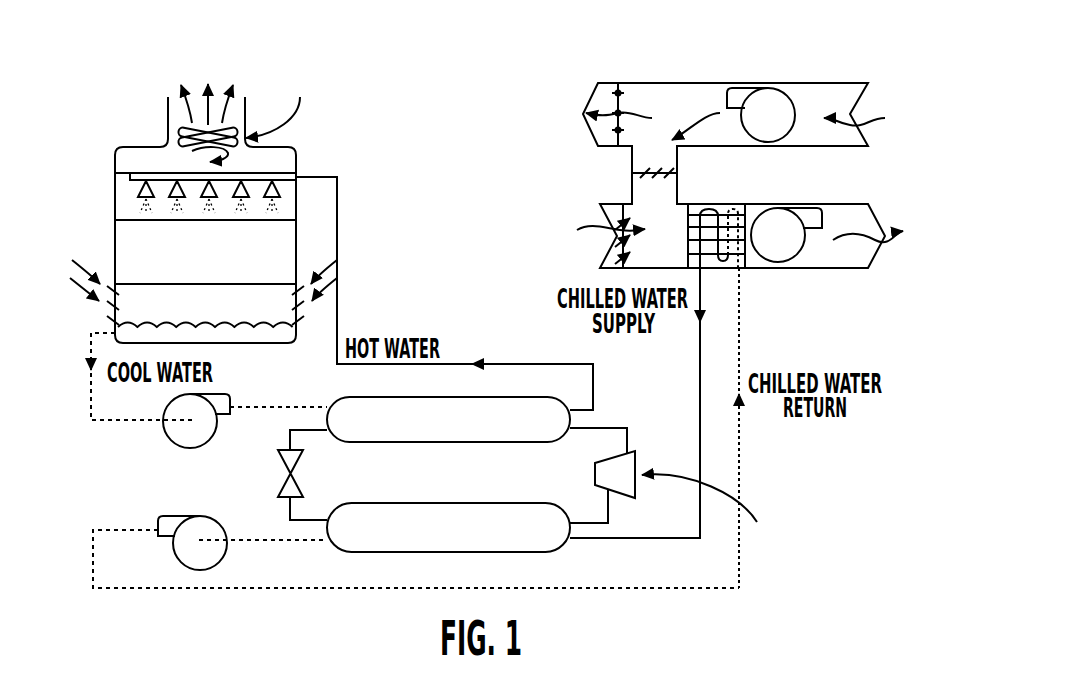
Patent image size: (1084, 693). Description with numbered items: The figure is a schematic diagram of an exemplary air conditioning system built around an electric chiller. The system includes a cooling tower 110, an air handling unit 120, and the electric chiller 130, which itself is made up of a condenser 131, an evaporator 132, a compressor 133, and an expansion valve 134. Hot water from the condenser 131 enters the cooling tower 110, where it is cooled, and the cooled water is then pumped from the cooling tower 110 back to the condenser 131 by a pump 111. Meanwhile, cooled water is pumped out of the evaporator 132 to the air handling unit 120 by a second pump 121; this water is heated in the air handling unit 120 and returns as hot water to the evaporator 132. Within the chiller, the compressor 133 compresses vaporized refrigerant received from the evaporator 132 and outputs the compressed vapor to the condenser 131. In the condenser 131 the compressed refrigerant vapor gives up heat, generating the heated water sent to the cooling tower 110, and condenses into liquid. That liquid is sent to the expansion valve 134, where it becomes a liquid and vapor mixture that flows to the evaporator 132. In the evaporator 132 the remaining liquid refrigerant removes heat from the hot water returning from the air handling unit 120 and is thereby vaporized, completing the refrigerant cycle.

The cooling tower 110 is at (110, 187).
The pump 111 is at (165, 437).
The air handling unit 120 is at (590, 92).
The pump 121 is at (158, 520).
The electric chiller 130 is at (606, 422).
The condenser 131 is at (358, 395).
The evaporator 132 is at (357, 553).
The compressor 133 is at (640, 465).
The expansion valve 134 is at (278, 491).